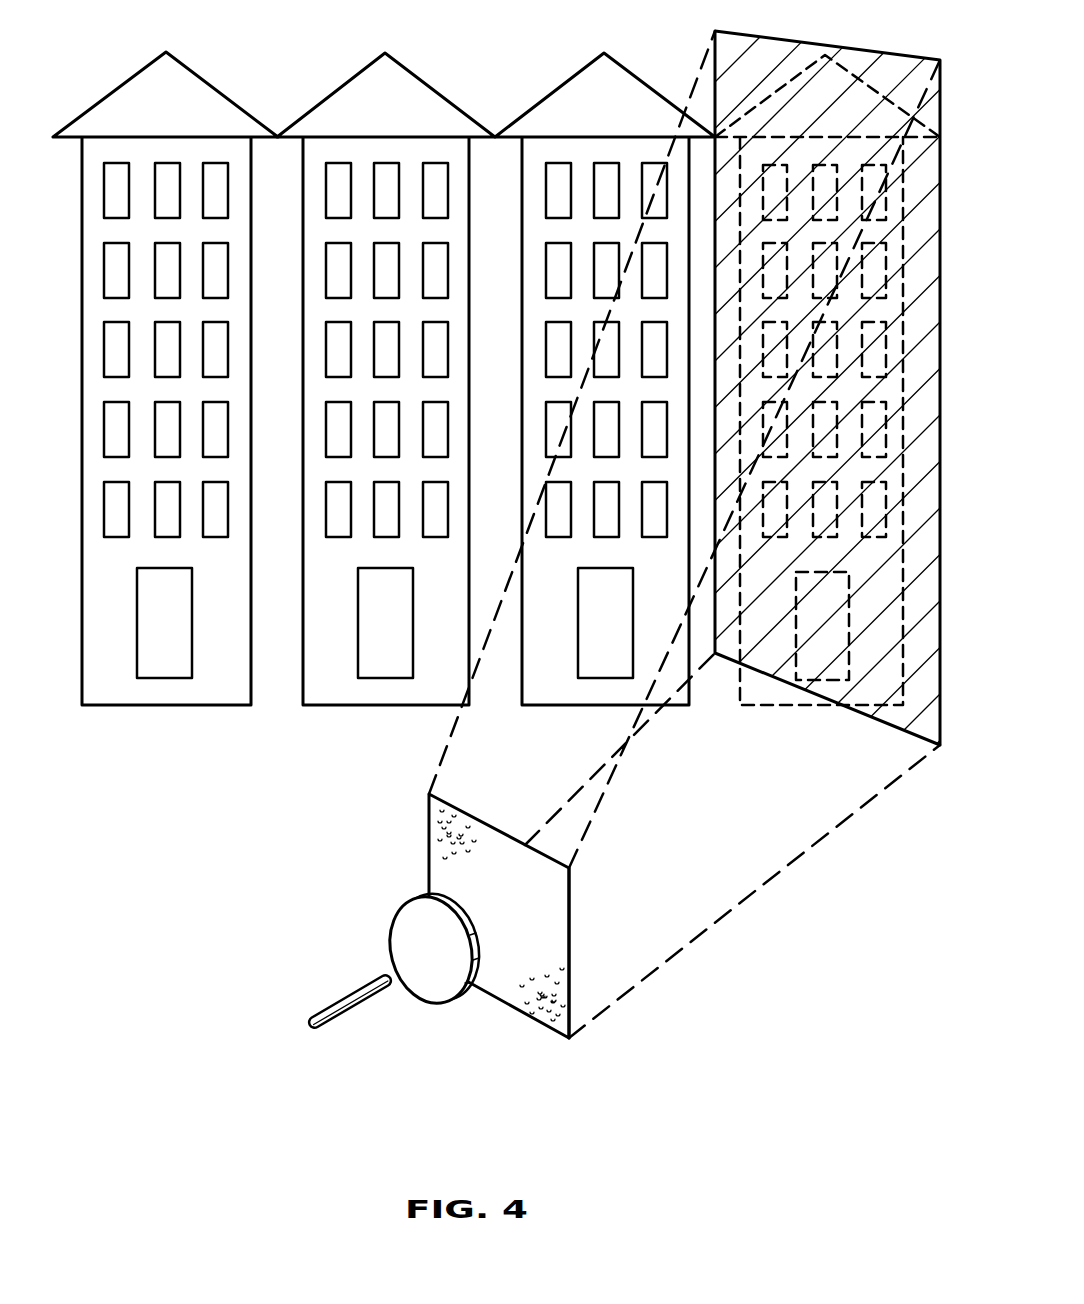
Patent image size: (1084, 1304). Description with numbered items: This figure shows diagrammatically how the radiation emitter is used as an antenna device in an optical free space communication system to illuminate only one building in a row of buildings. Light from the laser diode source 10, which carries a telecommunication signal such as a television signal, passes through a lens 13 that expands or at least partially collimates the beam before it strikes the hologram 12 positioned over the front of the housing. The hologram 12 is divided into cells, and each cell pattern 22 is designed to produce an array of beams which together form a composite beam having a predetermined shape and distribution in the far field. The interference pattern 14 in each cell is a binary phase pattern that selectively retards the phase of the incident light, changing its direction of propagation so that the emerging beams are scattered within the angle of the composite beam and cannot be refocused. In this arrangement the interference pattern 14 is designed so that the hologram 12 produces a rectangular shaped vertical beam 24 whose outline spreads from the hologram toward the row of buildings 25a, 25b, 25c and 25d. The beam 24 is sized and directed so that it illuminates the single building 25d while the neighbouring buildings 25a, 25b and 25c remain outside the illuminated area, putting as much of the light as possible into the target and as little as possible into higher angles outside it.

The laser diode source 10 is at (330, 1013).
The hologram 12 is at (506, 929).
The lens 13 is at (430, 988).
The interference pattern 14 is at (572, 892).
The cell pattern 22 is at (437, 848).
The rectangular shaped vertical beam 24 is at (888, 718).
The building 25a is at (201, 694).
The building 25b is at (392, 694).
The building 25c is at (567, 694).
The building 25d is at (817, 702).